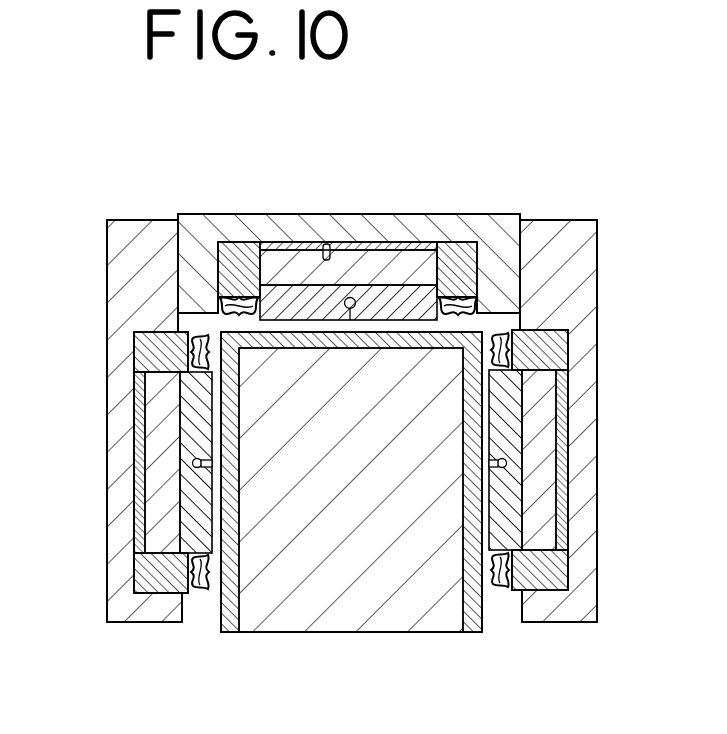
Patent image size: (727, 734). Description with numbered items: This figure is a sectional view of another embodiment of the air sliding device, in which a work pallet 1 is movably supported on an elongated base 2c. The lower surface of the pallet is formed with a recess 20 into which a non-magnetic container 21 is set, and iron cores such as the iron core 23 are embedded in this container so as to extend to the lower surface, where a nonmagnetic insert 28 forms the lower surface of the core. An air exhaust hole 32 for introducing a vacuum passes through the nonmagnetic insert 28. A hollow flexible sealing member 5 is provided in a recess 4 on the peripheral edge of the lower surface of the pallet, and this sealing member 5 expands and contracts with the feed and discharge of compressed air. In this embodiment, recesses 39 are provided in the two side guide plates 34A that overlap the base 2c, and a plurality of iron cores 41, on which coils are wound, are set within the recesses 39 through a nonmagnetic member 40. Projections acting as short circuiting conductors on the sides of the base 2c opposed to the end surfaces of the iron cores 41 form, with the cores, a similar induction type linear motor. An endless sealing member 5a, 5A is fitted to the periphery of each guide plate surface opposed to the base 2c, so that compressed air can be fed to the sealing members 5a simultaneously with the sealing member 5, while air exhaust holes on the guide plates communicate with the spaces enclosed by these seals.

The work pallet 1 is at (282, 205).
The base 2c is at (363, 632).
The recess 4 is at (236, 296).
The hollow flexible sealing member 5 is at (212, 306).
The endless sealing member 5A is at (229, 313).
The endless sealing member 5a is at (200, 592).
The recess 20 is at (326, 246).
The non-magnetic container 21 is at (460, 296).
The iron core 23 is at (358, 258).
The nonmagnetic insert 28 is at (403, 296).
The air exhaust hole 32 is at (352, 312).
The side guide plate 34A is at (122, 388).
The recess 39 is at (142, 510).
The nonmagnetic member 40 is at (150, 562).
The iron core 41 is at (158, 442).